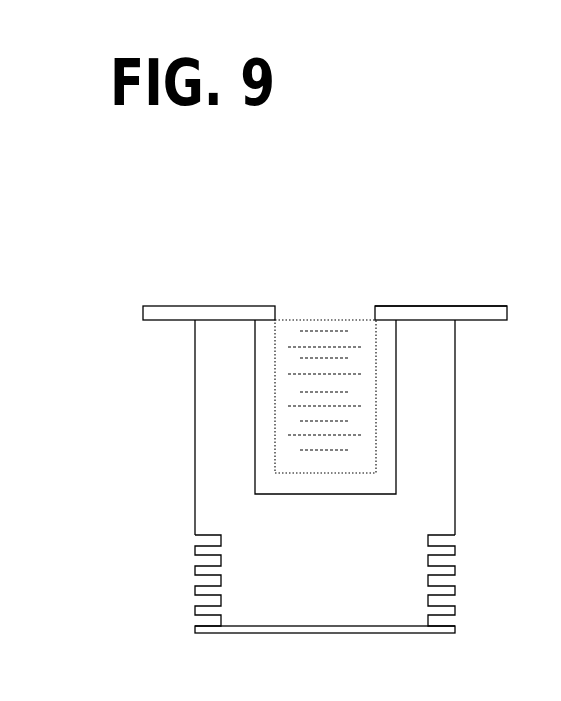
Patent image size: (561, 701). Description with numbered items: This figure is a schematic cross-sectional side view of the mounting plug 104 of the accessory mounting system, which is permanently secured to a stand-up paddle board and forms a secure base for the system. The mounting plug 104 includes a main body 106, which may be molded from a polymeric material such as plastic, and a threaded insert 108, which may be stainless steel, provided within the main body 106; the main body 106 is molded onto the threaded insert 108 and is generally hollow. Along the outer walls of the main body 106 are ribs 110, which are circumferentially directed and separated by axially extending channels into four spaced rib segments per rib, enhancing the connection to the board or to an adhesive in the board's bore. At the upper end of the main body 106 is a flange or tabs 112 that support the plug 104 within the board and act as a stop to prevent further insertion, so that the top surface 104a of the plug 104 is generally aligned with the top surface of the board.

The mounting plug 104 is at (291, 440).
The top surface of the plug 104a is at (440, 306).
The main body 106 is at (195, 477).
The threaded insert 108 is at (323, 325).
The ribs 110 is at (197, 610).
The flange or tabs 112 is at (477, 313).